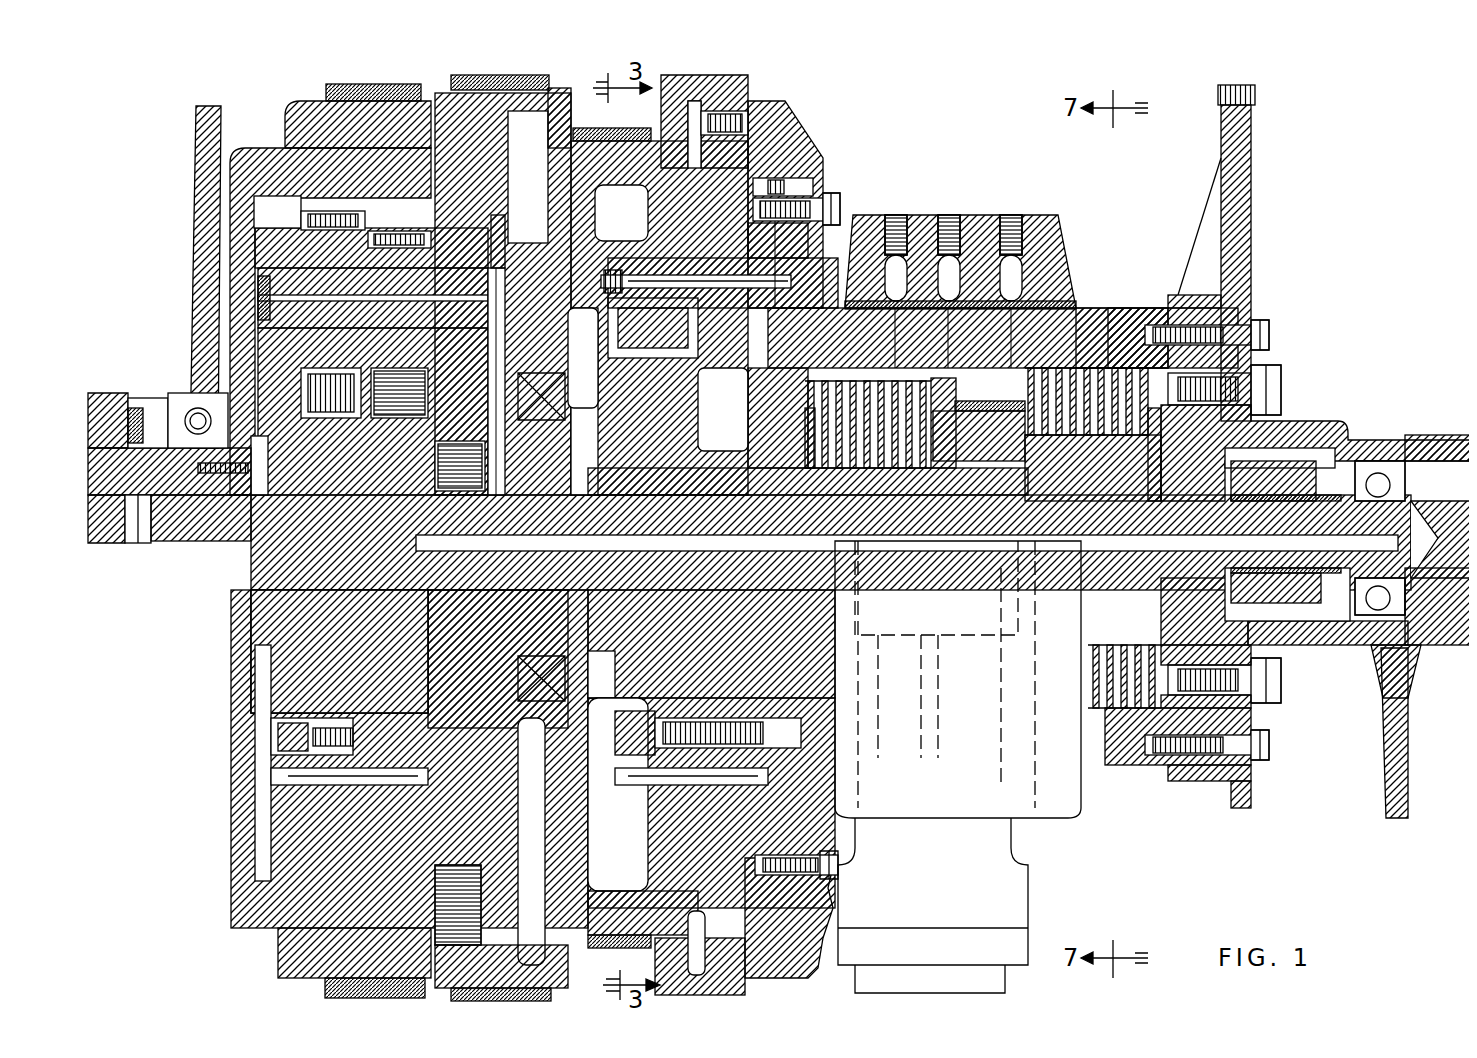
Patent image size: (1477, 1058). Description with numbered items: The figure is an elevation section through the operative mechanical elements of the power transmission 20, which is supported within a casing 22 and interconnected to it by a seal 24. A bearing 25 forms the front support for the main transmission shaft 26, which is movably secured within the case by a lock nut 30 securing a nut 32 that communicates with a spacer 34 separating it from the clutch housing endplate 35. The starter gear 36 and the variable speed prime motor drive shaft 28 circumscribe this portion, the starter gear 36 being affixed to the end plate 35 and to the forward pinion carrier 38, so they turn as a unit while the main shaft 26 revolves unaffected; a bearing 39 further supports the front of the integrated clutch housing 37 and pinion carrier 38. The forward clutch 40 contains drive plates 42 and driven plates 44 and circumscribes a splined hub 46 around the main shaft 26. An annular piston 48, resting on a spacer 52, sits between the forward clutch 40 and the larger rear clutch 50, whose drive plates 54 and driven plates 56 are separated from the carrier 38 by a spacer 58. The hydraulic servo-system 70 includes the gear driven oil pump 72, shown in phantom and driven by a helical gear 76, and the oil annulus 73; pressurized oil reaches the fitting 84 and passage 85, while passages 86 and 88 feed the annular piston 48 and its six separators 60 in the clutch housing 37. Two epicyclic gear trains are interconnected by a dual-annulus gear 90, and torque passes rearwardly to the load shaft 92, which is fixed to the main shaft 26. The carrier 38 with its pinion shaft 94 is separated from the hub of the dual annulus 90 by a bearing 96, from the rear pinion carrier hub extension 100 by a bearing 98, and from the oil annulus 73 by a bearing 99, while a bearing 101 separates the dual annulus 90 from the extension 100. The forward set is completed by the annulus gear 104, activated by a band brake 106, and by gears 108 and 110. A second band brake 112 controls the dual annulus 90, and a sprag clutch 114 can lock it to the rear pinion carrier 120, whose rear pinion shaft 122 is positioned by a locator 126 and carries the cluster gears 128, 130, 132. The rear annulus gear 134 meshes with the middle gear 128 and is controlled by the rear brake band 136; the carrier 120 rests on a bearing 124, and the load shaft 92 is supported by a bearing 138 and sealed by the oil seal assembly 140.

The power transmission 20 is at (1275, 383).
The casing 22 is at (215, 110).
The seal 24 is at (1405, 680).
The bearing 25 is at (1410, 650).
The main transmission shaft 26 is at (1400, 470).
The variable speed prime motor drive shaft 28 is at (1330, 420).
The lock nut 30 is at (1365, 538).
The nut 32 is at (1280, 480).
The spacer 34 is at (1275, 590).
The clutch housing endplate 35 is at (1225, 445).
The starter gear 36 is at (1245, 270).
The clutch housing 37 is at (1060, 335).
The forward pinion carrier 38 is at (630, 800).
The bearing 39 is at (1250, 660).
The forward clutch 40 is at (1100, 300).
The drive plates 42 is at (1070, 440).
The driven plates 44 is at (1080, 440).
The splined hub 46 is at (1030, 440).
The annular piston 48 is at (895, 420).
The rear clutch 50 is at (930, 470).
The spacer 52 is at (915, 420).
The drive plates 54 is at (855, 400).
The driven plates 56 is at (835, 400).
The spacer 58 is at (850, 470).
The separators 60 is at (984, 432).
The hydraulic servo-system 70 is at (1065, 795).
The gear driven oil pump 72 is at (950, 897).
The oil annulus 73 is at (905, 215).
The helical gear 76 is at (790, 125).
The fitting 84 is at (885, 207).
The passage 85 is at (945, 240).
The passage 86 is at (1010, 340).
The passage 88 is at (1005, 320).
The dual-annulus gear 90 is at (572, 218).
The load shaft 92 is at (250, 140).
The pinion shaft 94 is at (810, 260).
The bearing 96 is at (790, 600).
The bearing 98 is at (830, 595).
The bearing 99 is at (1010, 260).
The rear pinion carrier hub extension 100 is at (830, 640).
The bearing 101 is at (805, 660).
The annulus gear 104 is at (745, 78).
The band brake 106 is at (614, 122).
The gear 108 is at (800, 160).
The gear 110 is at (805, 195).
The second band brake 112 is at (503, 294).
The sprag clutch 114 is at (603, 358).
The rear pinion carrier 120 is at (200, 280).
The rear pinion shaft 122 is at (500, 270).
The bearing 124 is at (230, 610).
The locator 126 is at (575, 338).
The gear 128 is at (290, 247).
The gear 130 is at (485, 170).
The gear 132 is at (296, 212).
The rear annulus gear 134 is at (225, 190).
The rear brake band 136 is at (330, 92).
The bearing 138 is at (140, 392).
The oil seal assembly 140 is at (145, 535).